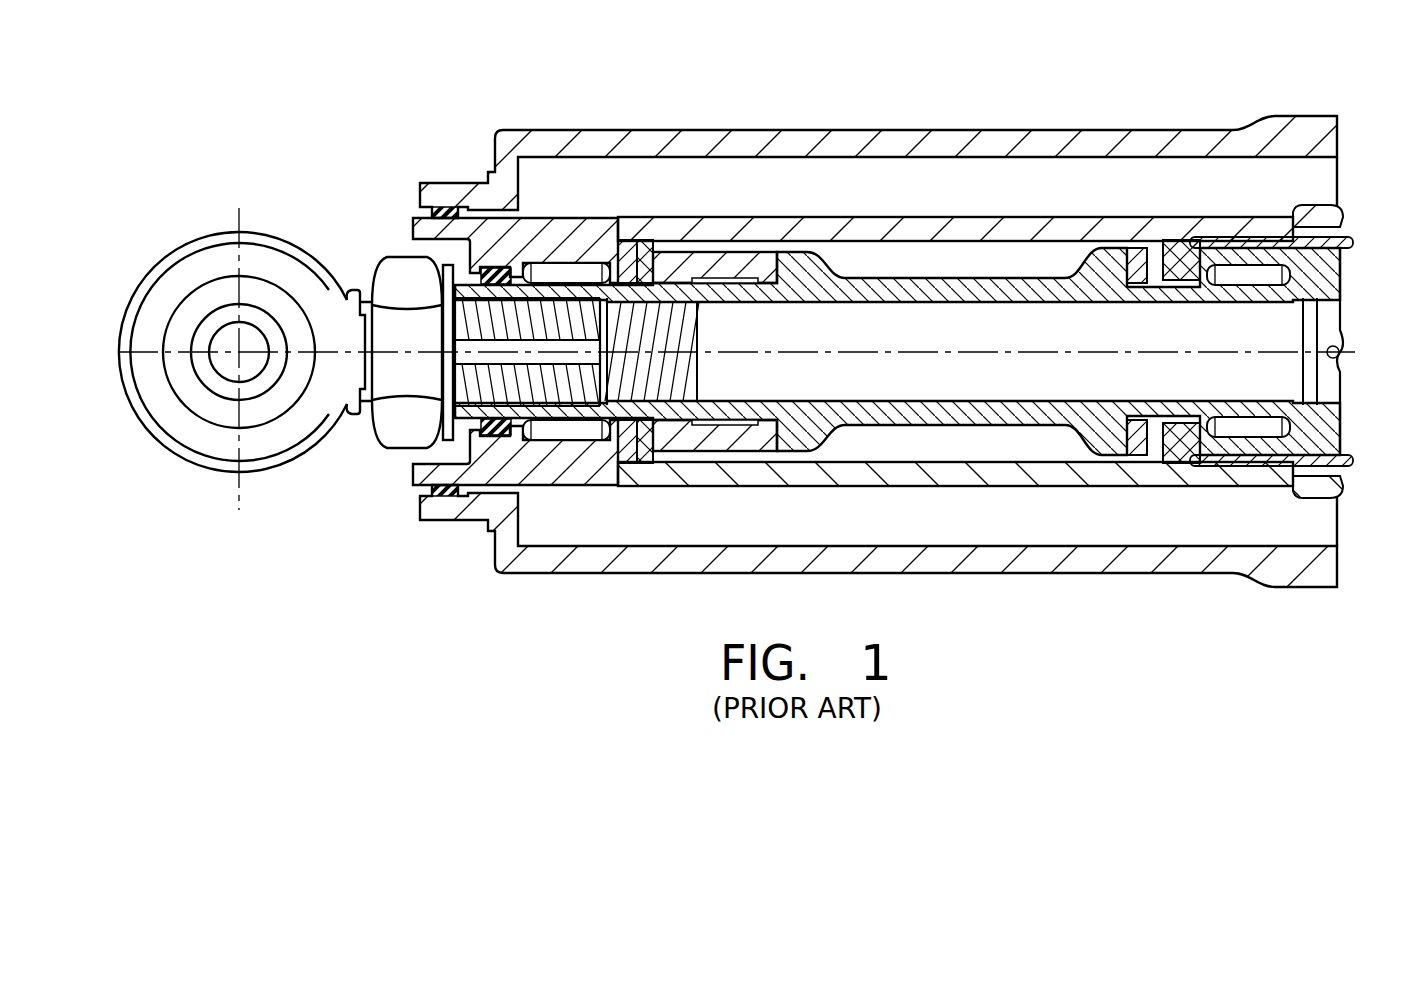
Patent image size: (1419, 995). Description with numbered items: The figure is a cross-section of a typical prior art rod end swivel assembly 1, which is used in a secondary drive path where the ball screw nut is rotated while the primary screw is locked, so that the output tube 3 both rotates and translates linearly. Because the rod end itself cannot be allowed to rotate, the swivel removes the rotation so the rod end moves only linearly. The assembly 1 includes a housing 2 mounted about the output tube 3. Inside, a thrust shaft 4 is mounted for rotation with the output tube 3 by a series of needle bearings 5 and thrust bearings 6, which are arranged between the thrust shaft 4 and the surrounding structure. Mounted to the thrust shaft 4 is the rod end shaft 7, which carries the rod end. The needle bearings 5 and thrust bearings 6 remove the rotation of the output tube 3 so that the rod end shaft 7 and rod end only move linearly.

The rod end swivel assembly 1 is at (736, 301).
The housing 2 is at (853, 130).
The output tube 3 is at (893, 217).
The thrust shaft 4 is at (963, 302).
The needle bearings 5 is at (581, 265).
The thrust bearings 6 is at (648, 270).
The rod end shaft 7 is at (473, 322).